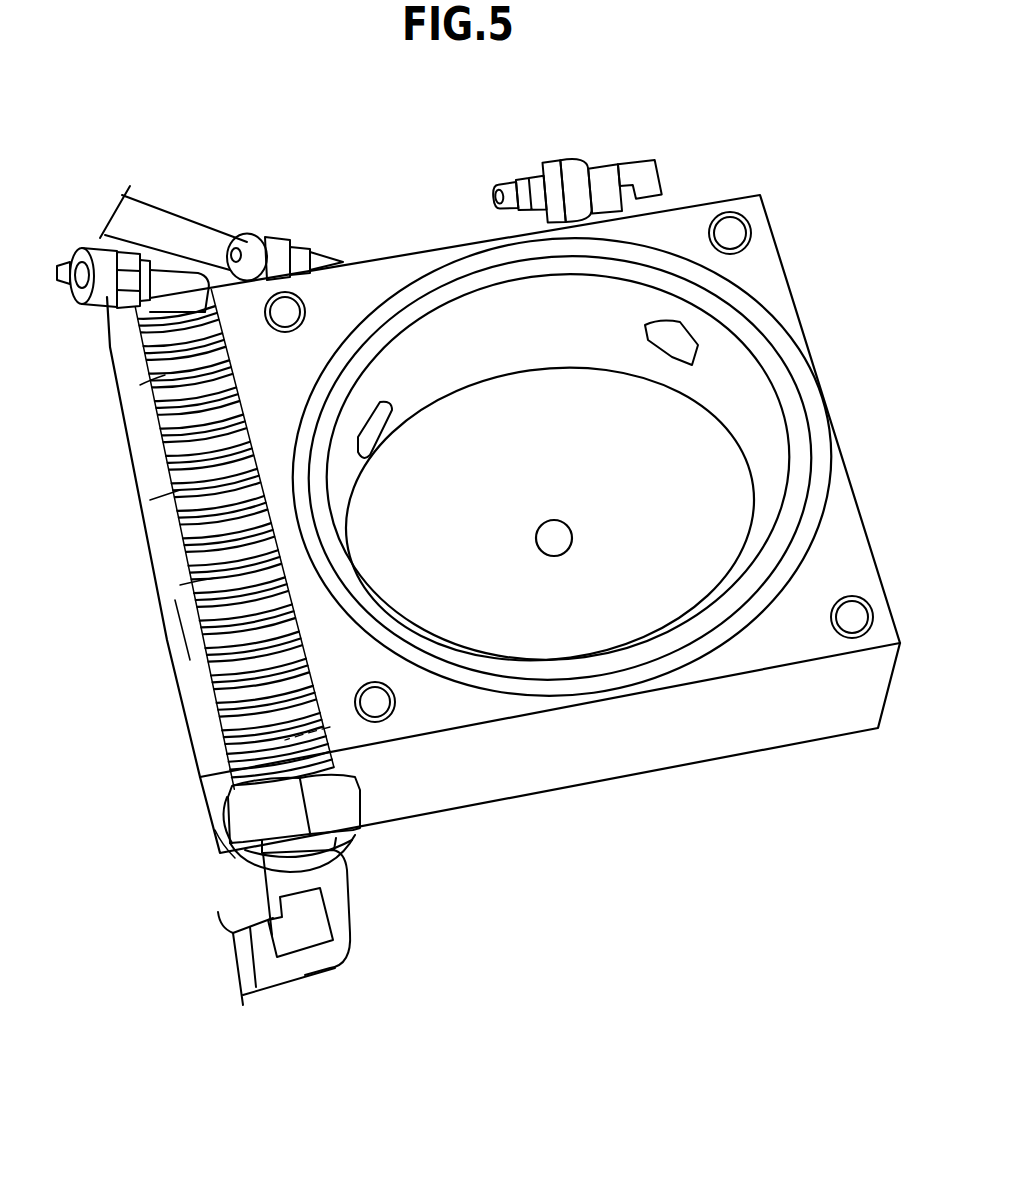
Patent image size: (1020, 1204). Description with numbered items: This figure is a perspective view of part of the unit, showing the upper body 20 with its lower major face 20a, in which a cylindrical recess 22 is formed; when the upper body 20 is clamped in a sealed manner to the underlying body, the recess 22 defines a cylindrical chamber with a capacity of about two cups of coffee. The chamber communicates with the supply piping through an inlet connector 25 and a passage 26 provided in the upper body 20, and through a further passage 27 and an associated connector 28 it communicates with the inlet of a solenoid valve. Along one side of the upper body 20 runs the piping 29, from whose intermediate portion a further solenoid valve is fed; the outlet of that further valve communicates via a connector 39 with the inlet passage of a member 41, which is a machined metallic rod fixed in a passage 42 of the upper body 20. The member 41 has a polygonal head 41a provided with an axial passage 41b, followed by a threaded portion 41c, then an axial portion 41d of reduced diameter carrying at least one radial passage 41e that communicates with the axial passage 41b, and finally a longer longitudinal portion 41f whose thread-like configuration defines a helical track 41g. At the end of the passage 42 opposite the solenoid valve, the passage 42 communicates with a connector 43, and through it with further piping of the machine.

The upper body 20 is at (773, 230).
The lower major face 20a is at (200, 640).
The cylindrical recess 22 is at (757, 423).
The inlet connector 25 is at (603, 178).
The passage 26 is at (674, 352).
The further passage 27 is at (373, 406).
The connector 28 is at (327, 263).
The piping 29 is at (200, 243).
The connector 39 is at (310, 963).
The member 41 is at (200, 668).
The polygonal head 41a is at (213, 830).
The axial passage 41b is at (313, 867).
The threaded portion 41c is at (198, 788).
The axial portion of reduced diameter 41d is at (333, 726).
The radial passage 41e is at (200, 736).
The longitudinal portion 41f is at (198, 590).
The helical track 41g is at (153, 387).
The passage 42 is at (173, 513).
The connector 43 is at (177, 287).